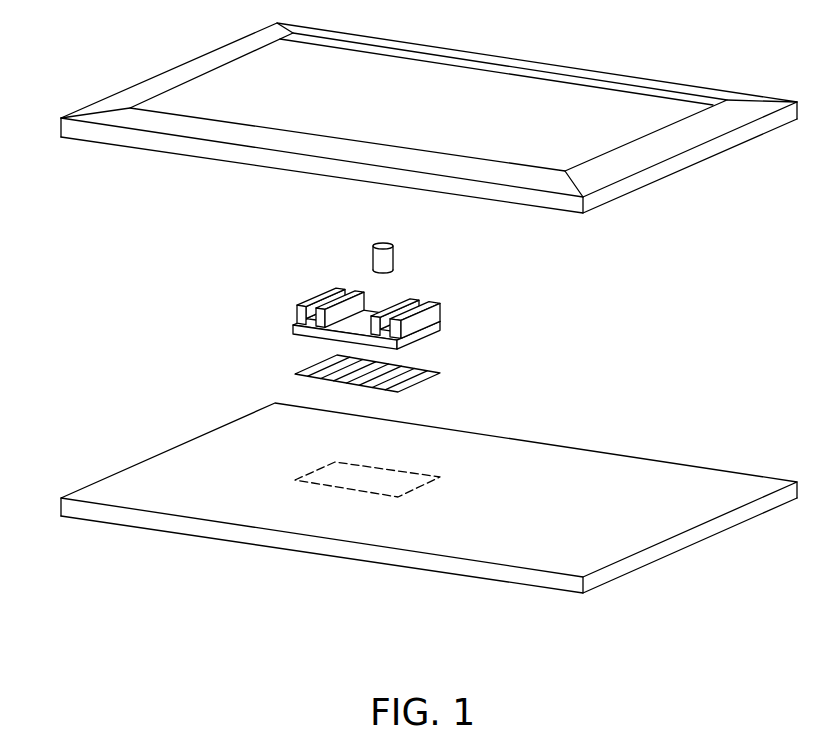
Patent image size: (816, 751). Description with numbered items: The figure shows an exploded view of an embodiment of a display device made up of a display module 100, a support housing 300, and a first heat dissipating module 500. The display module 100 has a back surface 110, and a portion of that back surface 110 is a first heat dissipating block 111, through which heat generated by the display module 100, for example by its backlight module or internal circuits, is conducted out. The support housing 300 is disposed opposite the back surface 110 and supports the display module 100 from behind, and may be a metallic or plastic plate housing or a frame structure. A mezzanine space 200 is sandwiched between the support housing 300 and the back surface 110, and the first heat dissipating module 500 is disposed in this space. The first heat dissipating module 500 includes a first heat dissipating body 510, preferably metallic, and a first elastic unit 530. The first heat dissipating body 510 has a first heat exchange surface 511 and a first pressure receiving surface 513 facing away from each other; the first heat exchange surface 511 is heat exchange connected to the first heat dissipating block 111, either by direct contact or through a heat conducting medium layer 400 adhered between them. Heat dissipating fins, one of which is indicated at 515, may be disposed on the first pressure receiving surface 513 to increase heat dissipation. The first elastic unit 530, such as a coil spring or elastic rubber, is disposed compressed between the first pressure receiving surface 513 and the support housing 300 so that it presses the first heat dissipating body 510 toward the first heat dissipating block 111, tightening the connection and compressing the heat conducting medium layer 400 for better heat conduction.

The display module 100 is at (429, 492).
The back surface 110 is at (650, 484).
The first heat dissipating block 111 is at (311, 489).
The mezzanine space 200 is at (77, 490).
The support housing 300 is at (638, 55).
The heat conducting medium layer 400 is at (295, 374).
The first heat dissipating module 500 is at (262, 225).
The first heat dissipating body 510 is at (370, 306).
The first heat exchange surface 511 is at (427, 338).
The first pressure receiving surface 513 is at (373, 312).
The rib 515 is at (422, 315).
The first elastic unit 530 is at (373, 246).